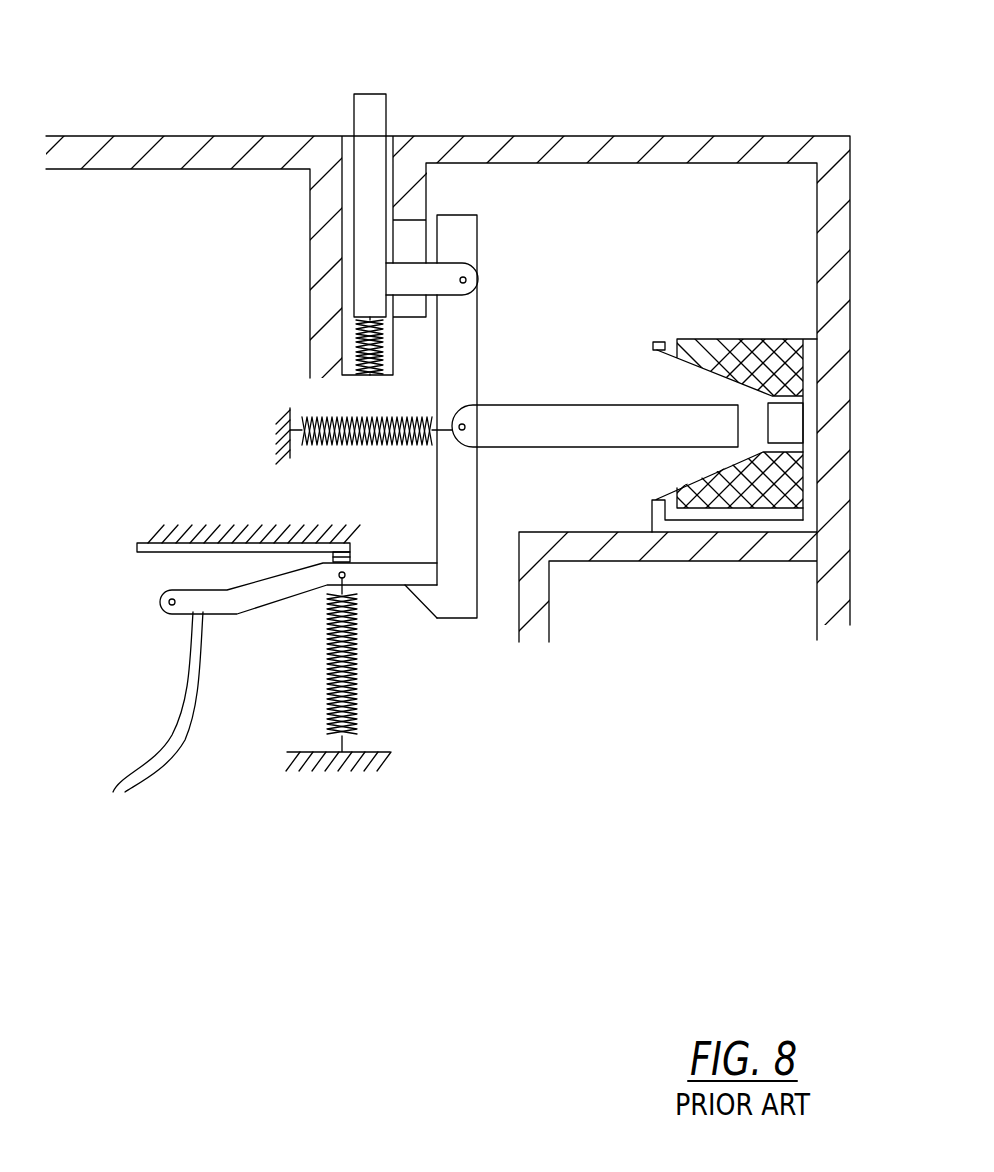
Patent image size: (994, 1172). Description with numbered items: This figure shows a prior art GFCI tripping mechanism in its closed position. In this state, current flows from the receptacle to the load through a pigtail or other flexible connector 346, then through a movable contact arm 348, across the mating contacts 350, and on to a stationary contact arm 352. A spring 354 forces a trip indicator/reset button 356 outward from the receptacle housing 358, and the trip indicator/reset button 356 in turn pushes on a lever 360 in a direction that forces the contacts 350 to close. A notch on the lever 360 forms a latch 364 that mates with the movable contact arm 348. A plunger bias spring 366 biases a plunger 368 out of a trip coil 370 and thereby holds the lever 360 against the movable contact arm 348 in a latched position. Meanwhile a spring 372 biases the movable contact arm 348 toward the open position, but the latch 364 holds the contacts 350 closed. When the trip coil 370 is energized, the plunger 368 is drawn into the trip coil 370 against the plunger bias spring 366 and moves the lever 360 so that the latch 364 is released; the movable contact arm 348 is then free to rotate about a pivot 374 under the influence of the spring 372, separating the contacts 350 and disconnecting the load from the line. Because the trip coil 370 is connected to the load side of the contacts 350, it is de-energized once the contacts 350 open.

The flexible connector 346 is at (178, 685).
The movable contact arm 348 is at (258, 600).
The mating contacts 350 is at (350, 556).
The stationary contact arm 352 is at (149, 543).
The spring 354 is at (353, 332).
The trip indicator/reset button 356 is at (365, 94).
The receptacle housing 358 is at (103, 137).
The lever 360 is at (470, 232).
The latch 364 is at (420, 586).
The plunger bias spring 366 is at (351, 447).
The plunger 368 is at (578, 405).
The trip coil 370 is at (755, 338).
The spring 372 is at (355, 668).
The pivot 374 is at (162, 600).